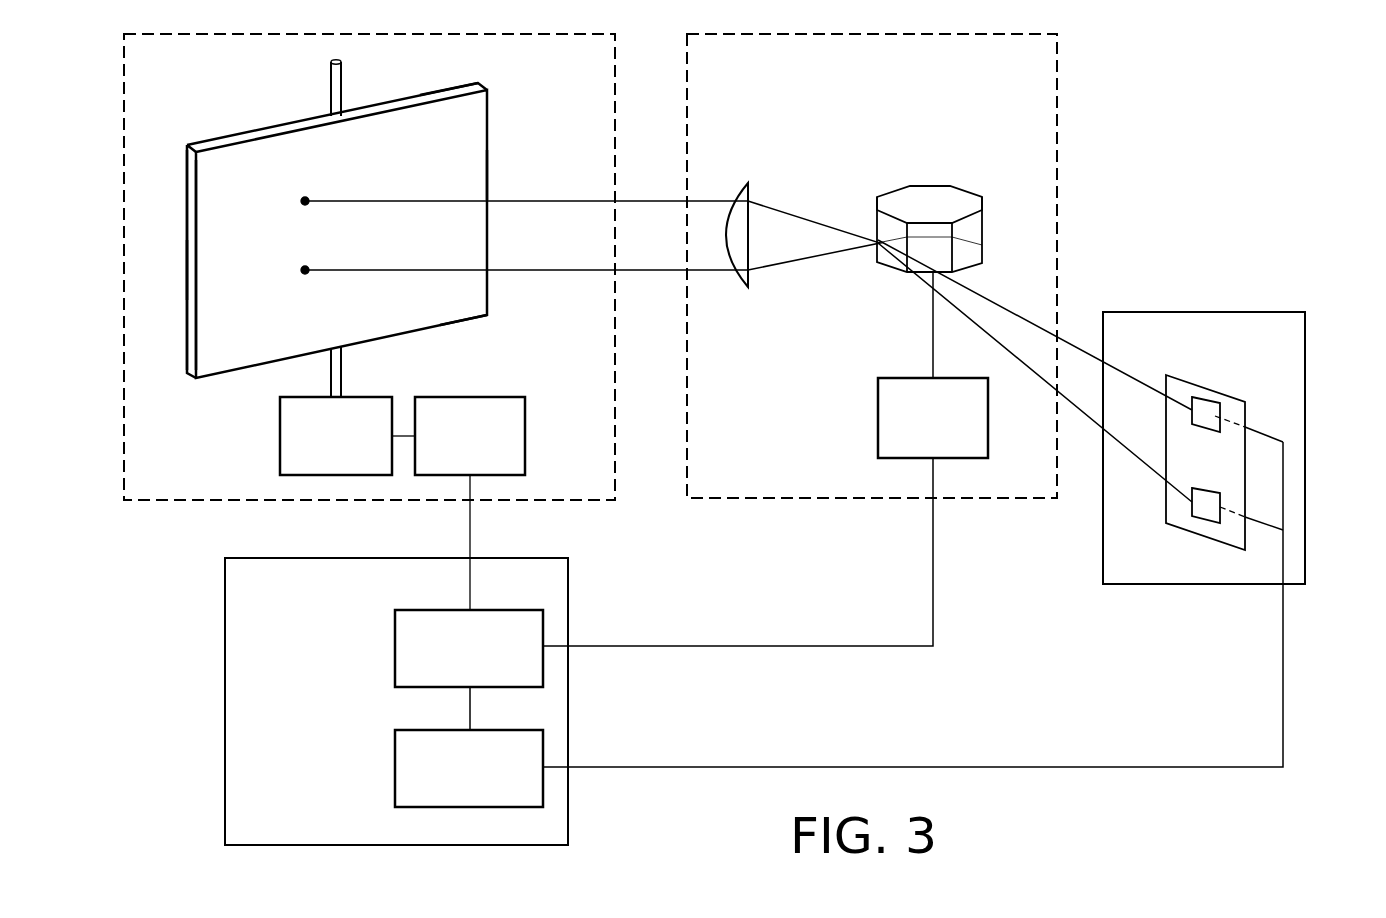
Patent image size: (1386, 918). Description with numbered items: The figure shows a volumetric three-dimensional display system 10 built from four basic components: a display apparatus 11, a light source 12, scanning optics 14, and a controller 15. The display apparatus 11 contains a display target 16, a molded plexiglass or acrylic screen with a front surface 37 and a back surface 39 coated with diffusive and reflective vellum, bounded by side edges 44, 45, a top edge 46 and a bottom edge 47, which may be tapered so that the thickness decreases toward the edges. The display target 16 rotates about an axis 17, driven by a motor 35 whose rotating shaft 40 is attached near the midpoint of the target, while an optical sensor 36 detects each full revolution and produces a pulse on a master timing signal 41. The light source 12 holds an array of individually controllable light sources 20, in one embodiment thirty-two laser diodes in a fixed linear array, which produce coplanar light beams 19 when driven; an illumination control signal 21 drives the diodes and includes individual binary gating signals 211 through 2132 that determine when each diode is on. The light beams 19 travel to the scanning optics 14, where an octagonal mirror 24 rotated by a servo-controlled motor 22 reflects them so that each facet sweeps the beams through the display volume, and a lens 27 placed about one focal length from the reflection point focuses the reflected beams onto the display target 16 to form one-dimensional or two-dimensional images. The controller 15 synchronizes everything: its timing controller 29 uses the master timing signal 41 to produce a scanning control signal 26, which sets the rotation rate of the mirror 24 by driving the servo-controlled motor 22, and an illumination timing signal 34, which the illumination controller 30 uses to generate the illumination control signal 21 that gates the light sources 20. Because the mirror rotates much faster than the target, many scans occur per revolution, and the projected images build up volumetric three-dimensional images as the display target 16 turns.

The 3-D display system 10 is at (1197, 118).
The display apparatus 11 is at (190, 503).
The light source 12 is at (1102, 554).
The scanning optics 14 is at (1037, 137).
The controller 15 is at (225, 725).
The display target 16 is at (200, 400).
The axis 17 is at (340, 53).
The light beams 19 is at (980, 318).
The individually controllable light sources 20 is at (1198, 488).
The binary gating signal 211 is at (1263, 432).
The binary gating signal 2132 is at (1263, 520).
The illumination control signal 21 is at (613, 768).
The servo-controlled motor 22 is at (878, 412).
The octagonal mirror 24 is at (927, 195).
The scanning control signal 26 is at (613, 648).
The lens 27 is at (735, 185).
The timing controller 29 is at (395, 648).
The illumination controller 30 is at (395, 768).
The illumination timing signal 34 is at (470, 712).
The motor 35 is at (280, 439).
The optical sensor 36 is at (525, 437).
The front surface 37 is at (212, 211).
The back surface 39 is at (182, 185).
The rotating shaft 40 is at (342, 370).
The master timing signal 41 is at (472, 528).
The side edge 44 is at (190, 257).
The side edge 45 is at (488, 175).
The top edge 46 is at (445, 88).
The bottom edge 47 is at (453, 323).